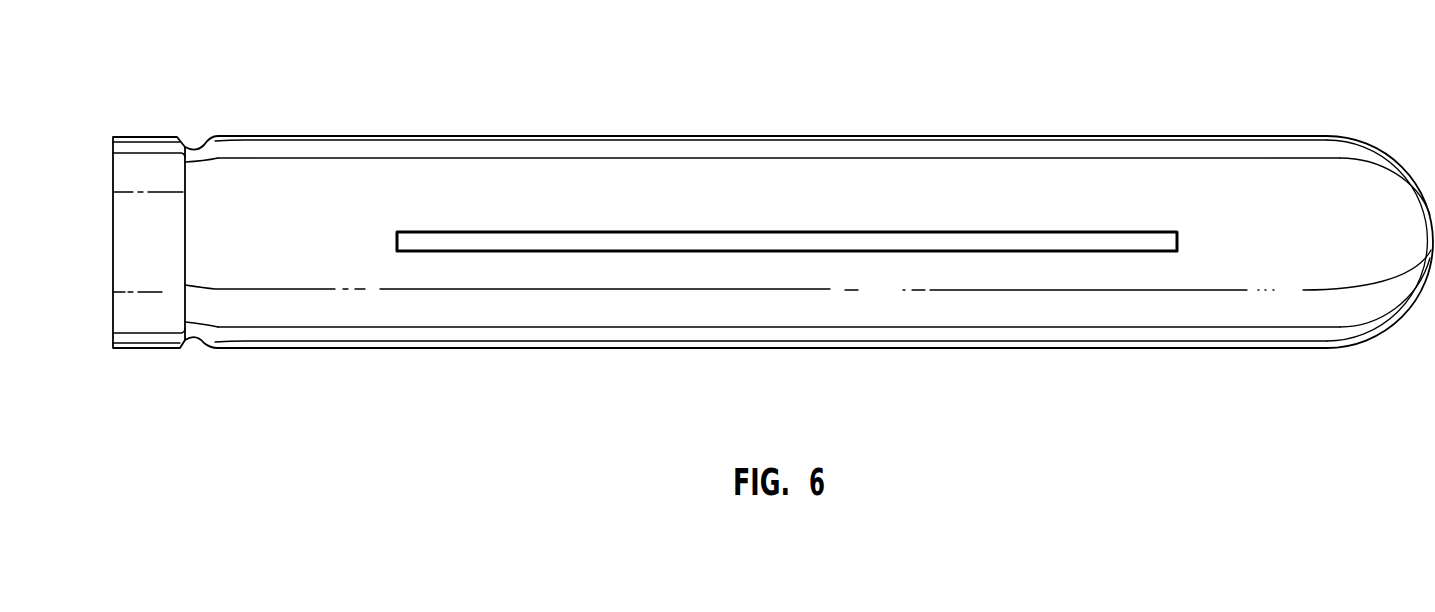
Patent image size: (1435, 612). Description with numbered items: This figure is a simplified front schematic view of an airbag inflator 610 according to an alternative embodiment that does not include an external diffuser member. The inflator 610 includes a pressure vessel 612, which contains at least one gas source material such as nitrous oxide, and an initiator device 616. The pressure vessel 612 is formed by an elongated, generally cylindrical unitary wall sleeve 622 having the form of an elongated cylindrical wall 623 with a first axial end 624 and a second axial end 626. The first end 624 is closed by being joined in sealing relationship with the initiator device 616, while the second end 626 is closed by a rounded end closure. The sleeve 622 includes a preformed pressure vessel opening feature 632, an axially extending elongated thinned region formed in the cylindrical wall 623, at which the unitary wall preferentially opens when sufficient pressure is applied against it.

The airbag inflator 610 is at (773, 244).
The pressure vessel 612 is at (456, 155).
The initiator device 616 is at (157, 180).
The unitary wall sleeve 622 is at (955, 313).
The elongated cylindrical wall 623 is at (450, 332).
The first axial end 624 is at (198, 352).
The second axial end 626 is at (1342, 352).
The preformed pressure vessel opening feature 632 is at (832, 233).